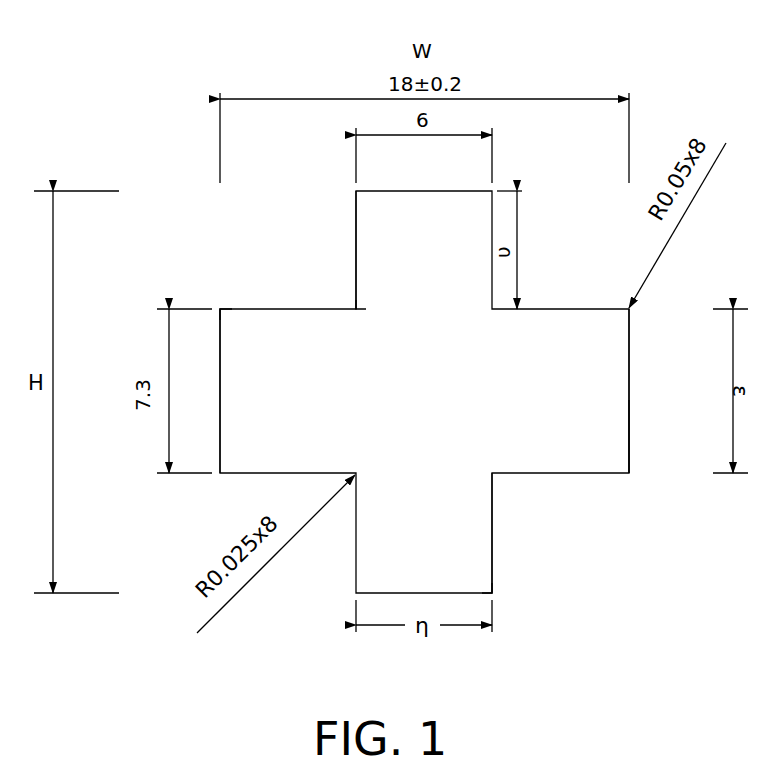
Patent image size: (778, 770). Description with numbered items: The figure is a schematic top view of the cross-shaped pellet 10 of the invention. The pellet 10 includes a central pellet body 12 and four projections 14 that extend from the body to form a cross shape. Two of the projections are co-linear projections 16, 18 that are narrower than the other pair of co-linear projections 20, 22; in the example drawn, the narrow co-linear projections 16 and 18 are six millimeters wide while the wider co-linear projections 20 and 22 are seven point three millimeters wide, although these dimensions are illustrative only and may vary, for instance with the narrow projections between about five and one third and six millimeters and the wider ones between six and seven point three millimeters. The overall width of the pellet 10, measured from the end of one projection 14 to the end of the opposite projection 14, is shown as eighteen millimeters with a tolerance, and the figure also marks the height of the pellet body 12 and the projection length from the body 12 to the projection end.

The pellet 10 is at (392, 329).
The pellet body 12 is at (428, 397).
The projections 14 is at (356, 219).
The co-linear projection 16 is at (356, 240).
The co-linear projection 18 is at (476, 597).
The co-linear projection 20 is at (220, 322).
The co-linear projection 22 is at (629, 427).